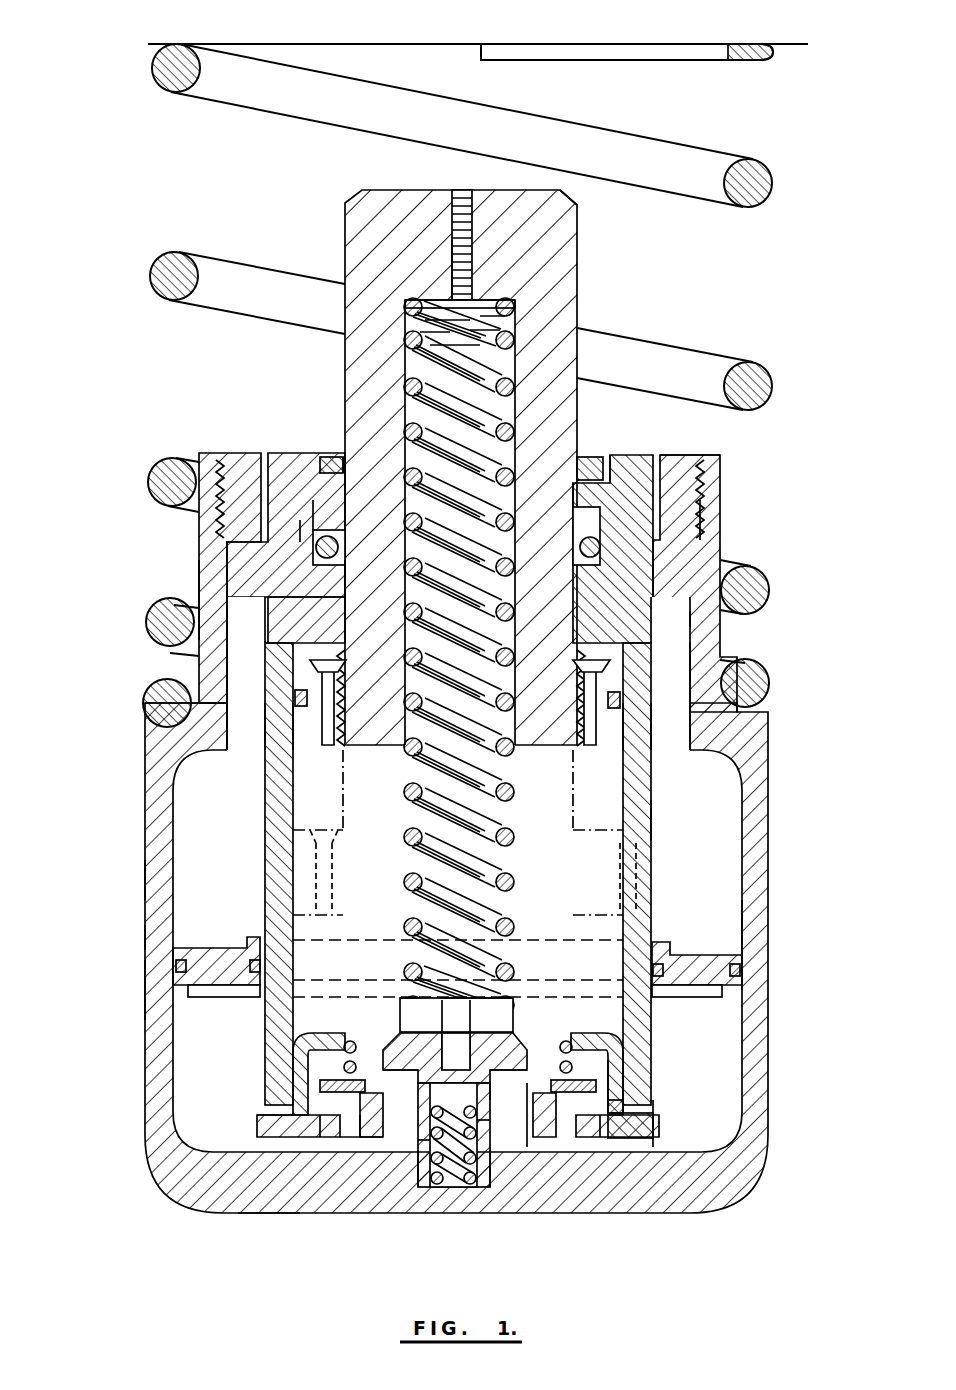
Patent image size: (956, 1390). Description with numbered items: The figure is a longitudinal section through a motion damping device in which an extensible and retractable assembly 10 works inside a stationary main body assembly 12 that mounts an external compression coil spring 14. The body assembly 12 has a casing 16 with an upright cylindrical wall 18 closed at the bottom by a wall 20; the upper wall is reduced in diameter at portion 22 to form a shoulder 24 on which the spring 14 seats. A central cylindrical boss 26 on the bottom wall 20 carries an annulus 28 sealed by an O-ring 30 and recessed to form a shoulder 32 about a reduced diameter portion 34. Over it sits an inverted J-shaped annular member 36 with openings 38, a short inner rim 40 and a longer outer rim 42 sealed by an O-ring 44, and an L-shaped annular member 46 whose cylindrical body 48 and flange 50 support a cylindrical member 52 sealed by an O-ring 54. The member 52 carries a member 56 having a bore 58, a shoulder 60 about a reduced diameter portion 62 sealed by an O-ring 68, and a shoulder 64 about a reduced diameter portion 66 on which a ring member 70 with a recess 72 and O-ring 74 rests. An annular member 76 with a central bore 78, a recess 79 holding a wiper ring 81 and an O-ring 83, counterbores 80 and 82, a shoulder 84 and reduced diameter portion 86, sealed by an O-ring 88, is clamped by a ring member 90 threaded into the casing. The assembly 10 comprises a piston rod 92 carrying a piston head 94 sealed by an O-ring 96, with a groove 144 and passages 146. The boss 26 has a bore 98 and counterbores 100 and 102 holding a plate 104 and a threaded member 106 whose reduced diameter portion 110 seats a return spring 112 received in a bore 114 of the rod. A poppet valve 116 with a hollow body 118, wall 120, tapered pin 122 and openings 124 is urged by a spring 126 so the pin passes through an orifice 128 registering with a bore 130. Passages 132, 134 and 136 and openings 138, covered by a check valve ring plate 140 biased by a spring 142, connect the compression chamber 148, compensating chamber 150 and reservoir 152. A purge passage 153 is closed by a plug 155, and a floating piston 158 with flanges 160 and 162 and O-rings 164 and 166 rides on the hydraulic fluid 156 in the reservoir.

The extensible and retractable assembly 10 is at (563, 180).
The stationary main body assembly 12 is at (787, 763).
The compression coil spring 14 is at (745, 375).
The casing 16 is at (130, 972).
The cylindrical wall 18 is at (160, 882).
The bottom wall 20 is at (306, 1192).
The reduced diameter portion 22 is at (208, 602).
The shoulder 24 is at (162, 720).
The cylindrical boss 26 is at (522, 1135).
The annulus 28 is at (585, 1147).
The O-ring 30 is at (352, 1192).
The shoulder 32 is at (280, 1140).
The reduced diameter portion 34 is at (305, 1142).
The annular member 36 is at (665, 1005).
The openings 38 is at (580, 1040).
The depending cylindrical rim 40 is at (558, 1048).
The depending cylindrical rim 42 is at (610, 1090).
The O-ring 44 is at (620, 1118).
The annular member 46 is at (655, 1108).
The cylindrical body 48 is at (615, 1065).
The flange 50 is at (652, 1126).
The cylindrical member 52 is at (273, 906).
The O-ring 54 is at (622, 1108).
The member 56 is at (335, 633).
The bore 58 is at (560, 580).
The shoulder 60 is at (288, 640).
The reduced diameter portion 62 is at (318, 655).
The shoulder 64 is at (296, 593).
The reduced diameter portion 66 is at (333, 576).
The O-ring 68 is at (628, 640).
The ring member 70 is at (310, 520).
The recess 72 is at (350, 548).
The O-ring 74 is at (355, 520).
The annular member 76 is at (653, 570).
The central bore 78 is at (578, 496).
The recess 79 is at (590, 460).
The counterbore 80 is at (310, 565).
The wiper ring 81 is at (345, 470).
The counterbore 82 is at (232, 634).
The O-ring 83 is at (330, 457).
The shoulder 84 is at (690, 525).
The reduced diameter portion 86 is at (625, 470).
The O-ring 88 is at (690, 620).
The ring member 90 is at (672, 475).
The piston rod 92 is at (596, 254).
The piston head 94 is at (306, 872).
The O-ring 96 is at (615, 702).
The central bore 98 is at (500, 1135).
The counterbore 100 is at (372, 1116).
The counterbore 102 is at (390, 1045).
The plate 104 is at (470, 1085).
The member 106 is at (492, 1008).
The reduced diameter portion 110 is at (405, 998).
The compression coil spring 112 is at (350, 795).
The central bore 114 is at (505, 402).
The poppet valve 116 is at (455, 1250).
The hollow cylindrical body 118 is at (425, 1190).
The wall 120 is at (445, 1185).
The tapered pin 122 is at (470, 998).
The openings 124 is at (468, 1113).
The compression coil spring 126 is at (478, 1190).
The orifice 128 is at (462, 1075).
The central bore 130 is at (398, 1034).
The radially extending passages 132 is at (400, 1150).
The passage 134 is at (365, 1142).
The radially extending passages 136 is at (320, 1142).
The openings 138 is at (330, 1100).
The ring plate 140 is at (630, 1070).
The compression coil spring 142 is at (300, 1060).
The groove 144 is at (362, 668).
The passages 146 is at (458, 832).
The compression chamber 148 is at (605, 935).
The compensating chamber 150 is at (640, 805).
The reservoir 152 is at (725, 923).
The passage 153 is at (452, 250).
The plug 155 is at (462, 195).
The hydraulic fluid 156 is at (410, 322).
The floating piston 158 is at (205, 962).
The flange 160 is at (160, 1000).
The flange 162 is at (268, 932).
The O-ring 164 is at (185, 968).
The O-ring 166 is at (262, 966).